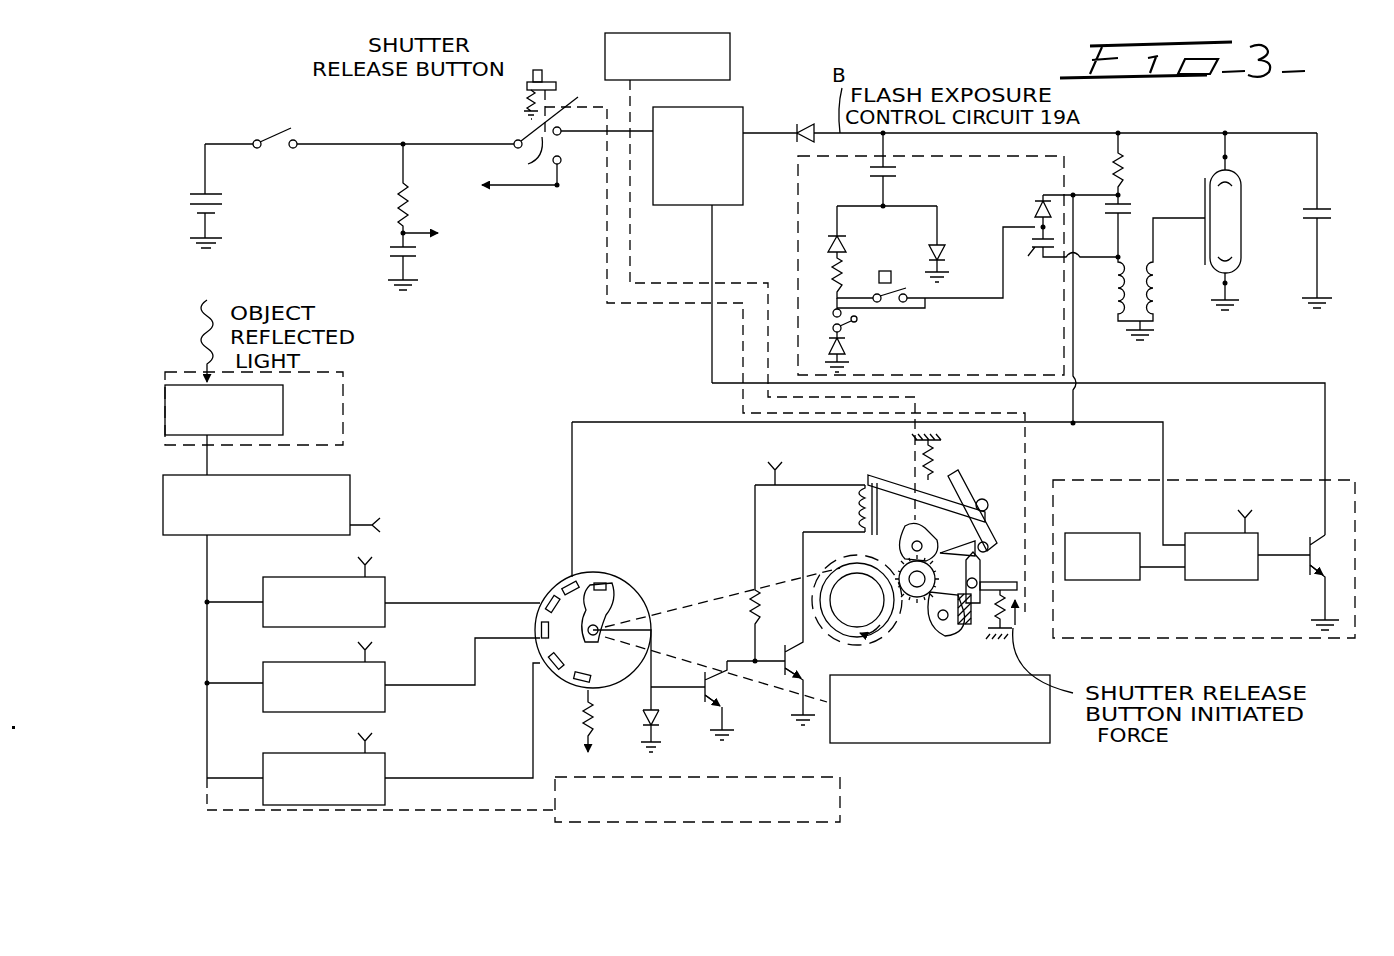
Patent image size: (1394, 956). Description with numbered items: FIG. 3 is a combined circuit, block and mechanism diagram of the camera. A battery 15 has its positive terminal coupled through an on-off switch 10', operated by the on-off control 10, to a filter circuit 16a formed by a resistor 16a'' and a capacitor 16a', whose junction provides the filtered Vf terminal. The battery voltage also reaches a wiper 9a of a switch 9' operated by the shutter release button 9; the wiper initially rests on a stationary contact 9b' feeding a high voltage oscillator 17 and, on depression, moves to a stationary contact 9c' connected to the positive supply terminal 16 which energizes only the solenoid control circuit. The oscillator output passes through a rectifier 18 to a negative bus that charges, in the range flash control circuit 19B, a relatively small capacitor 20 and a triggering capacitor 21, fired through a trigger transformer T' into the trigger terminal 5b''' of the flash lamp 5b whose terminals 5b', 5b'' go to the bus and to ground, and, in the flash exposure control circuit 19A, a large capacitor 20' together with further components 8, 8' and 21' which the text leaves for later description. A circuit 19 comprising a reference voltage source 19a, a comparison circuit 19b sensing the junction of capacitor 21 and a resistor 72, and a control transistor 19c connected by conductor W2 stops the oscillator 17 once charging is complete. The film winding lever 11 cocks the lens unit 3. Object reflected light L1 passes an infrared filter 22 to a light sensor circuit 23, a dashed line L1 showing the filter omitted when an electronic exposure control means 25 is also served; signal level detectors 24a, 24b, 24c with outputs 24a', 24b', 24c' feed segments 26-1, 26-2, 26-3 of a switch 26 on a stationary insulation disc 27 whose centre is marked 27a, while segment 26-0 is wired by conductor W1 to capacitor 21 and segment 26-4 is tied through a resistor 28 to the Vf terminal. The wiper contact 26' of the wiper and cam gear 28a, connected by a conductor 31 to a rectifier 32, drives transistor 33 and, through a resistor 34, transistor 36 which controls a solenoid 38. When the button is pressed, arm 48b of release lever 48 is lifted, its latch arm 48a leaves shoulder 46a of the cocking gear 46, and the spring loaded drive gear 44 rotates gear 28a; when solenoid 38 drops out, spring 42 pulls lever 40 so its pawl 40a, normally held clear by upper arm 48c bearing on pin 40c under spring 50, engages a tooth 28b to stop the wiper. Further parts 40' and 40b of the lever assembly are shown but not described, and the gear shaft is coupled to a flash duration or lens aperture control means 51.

The lens unit 3 is at (857, 600).
The flash lamp 5b is at (1245, 203).
The flash lamp terminal 5b' is at (1198, 158).
The flash lamp terminal 5b'' is at (1249, 290).
The trigger terminal 5b''' is at (1181, 221).
The relay coil 8 is at (931, 257).
The relay switch contact 8' is at (862, 335).
The shutter release button 9 is at (757, 341).
The switch 9' is at (507, 121).
The wiper 9a is at (537, 135).
The stationary contact 9b' is at (603, 105).
The stationary contact 9c' is at (575, 162).
The on-off control 10 is at (359, 136).
The on-off switch 10' is at (252, 166).
The film winding lever 11 is at (732, 52).
The battery 15 is at (200, 190).
The voltage supply node 16 is at (557, 187).
The filter circuit 16a is at (365, 194).
The capacitor 16a' is at (402, 255).
The resistor 16a'' is at (368, 193).
The high voltage oscillator 17 is at (738, 119).
The rectifier 18 is at (810, 128).
The oscillator control circuit 19 is at (1240, 458).
The flash exposure control circuit 19A is at (931, 265).
The range flash control circuit 19B is at (1108, 132).
The reference voltage source 19a is at (1115, 533).
The comparison circuit 19b is at (1209, 533).
The control transistor 19c is at (1308, 539).
The capacitor 20 is at (1330, 220).
The capacitor 20' is at (903, 171).
The triggering capacitor 21 is at (1132, 216).
The thyristor 21' is at (1068, 238).
The resistor 72 is at (1110, 173).
The trigger transformer T' is at (1161, 279).
The object reflected light L1 is at (370, 382).
The infrared filter 22 is at (283, 402).
The light sensor circuit 23 is at (352, 490).
The signal level detector 24a is at (327, 586).
The output terminal 24a' is at (462, 588).
The signal level detector 24b is at (327, 671).
The output terminal 24b' is at (462, 661).
The signal level detector 24c is at (327, 764).
The output terminal 24c' is at (462, 720).
The electronic exposure control means 25 is at (840, 798).
The switch 26 is at (593, 584).
The range flash trigger initiating conductor segment 26-0 is at (567, 578).
The conductive segment 26-1 is at (545, 599).
The conductive segment 26-2 is at (542, 628).
The conductive segment 26-3 is at (550, 659).
The last conductor segment 26-4 is at (596, 655).
The wiper contact 26' is at (628, 567).
The stationary insulation disc 27 is at (602, 573).
The wiper hub 27a is at (585, 568).
The resistor 28 is at (585, 738).
The wiper and cam gear 28a is at (618, 612).
The teeth 28b is at (892, 545).
The conductor 31 is at (656, 657).
The rectifier 32 is at (642, 722).
The NPN transistor 33 is at (735, 673).
The resistor 34 is at (748, 598).
The NPN transistor 36 is at (785, 672).
The solenoid 38 is at (858, 508).
The lever 40 is at (856, 499).
The lever arm 40' is at (1006, 501).
The pawl 40a is at (985, 530).
The roller 40b is at (989, 505).
The pin 40c is at (989, 546).
The spring 42 is at (933, 458).
The spring loaded drive gear 44 is at (915, 602).
The cocking gear 46 is at (940, 638).
The shoulder 46a is at (982, 632).
The release lever 48 is at (978, 570).
The latch arm 48a is at (1005, 600).
The arm 48b is at (993, 584).
The upper arm 48c is at (955, 620).
The spring 50 is at (1015, 618).
The flash duration or lens aperture control means 51 is at (845, 675).
The conductor W1 is at (1076, 398).
The conductor W2 is at (1328, 440).